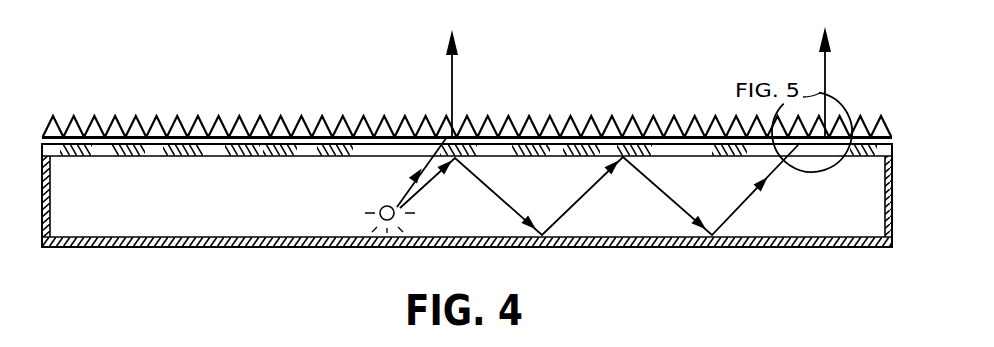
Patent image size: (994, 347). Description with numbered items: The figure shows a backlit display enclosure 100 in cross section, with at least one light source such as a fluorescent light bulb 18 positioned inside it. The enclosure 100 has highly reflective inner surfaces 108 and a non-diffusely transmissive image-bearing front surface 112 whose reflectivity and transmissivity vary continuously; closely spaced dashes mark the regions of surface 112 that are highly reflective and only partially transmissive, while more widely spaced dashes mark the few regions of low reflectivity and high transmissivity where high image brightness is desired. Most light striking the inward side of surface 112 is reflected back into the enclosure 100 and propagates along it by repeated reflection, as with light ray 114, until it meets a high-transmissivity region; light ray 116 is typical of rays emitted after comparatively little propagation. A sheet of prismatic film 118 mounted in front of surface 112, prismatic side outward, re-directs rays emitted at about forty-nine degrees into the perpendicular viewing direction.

The enclosure 100 is at (233, 248).
The highly reflective inner surfaces 108 is at (50, 211).
The image-bearing front surface 112 is at (278, 158).
The prismatic film 118 is at (257, 120).
The fluorescent light bulb 18 is at (378, 205).
The light ray 116 is at (453, 80).
The light ray 114 is at (826, 70).